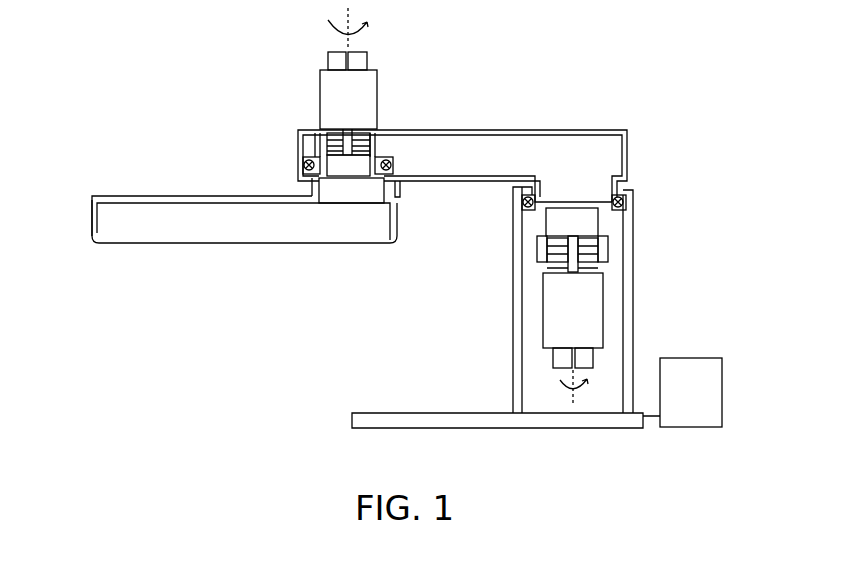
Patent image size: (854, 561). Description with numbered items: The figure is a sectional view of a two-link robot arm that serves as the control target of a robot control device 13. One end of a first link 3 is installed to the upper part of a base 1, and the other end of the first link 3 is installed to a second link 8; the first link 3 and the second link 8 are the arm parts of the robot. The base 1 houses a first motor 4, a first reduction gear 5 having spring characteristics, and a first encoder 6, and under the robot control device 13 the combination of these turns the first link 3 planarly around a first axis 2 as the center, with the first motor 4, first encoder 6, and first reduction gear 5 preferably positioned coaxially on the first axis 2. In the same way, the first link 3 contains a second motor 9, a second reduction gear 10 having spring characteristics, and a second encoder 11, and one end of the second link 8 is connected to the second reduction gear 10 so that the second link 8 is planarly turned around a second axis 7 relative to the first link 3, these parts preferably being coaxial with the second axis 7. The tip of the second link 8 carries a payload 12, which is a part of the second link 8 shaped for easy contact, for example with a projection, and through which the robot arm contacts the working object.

The base 1 is at (416, 413).
The first axis 2 is at (566, 400).
The first link 3 is at (445, 128).
The first motor 4 is at (545, 318).
The first reduction gear 5 is at (546, 228).
The first encoder 6 is at (553, 358).
The second axis 7 is at (328, 28).
The second link 8 is at (245, 245).
The second motor 9 is at (320, 82).
The second reduction gear 10 is at (365, 179).
The second encoder 11 is at (367, 60).
The payload 12 is at (92, 222).
The robot control device 13 is at (688, 358).